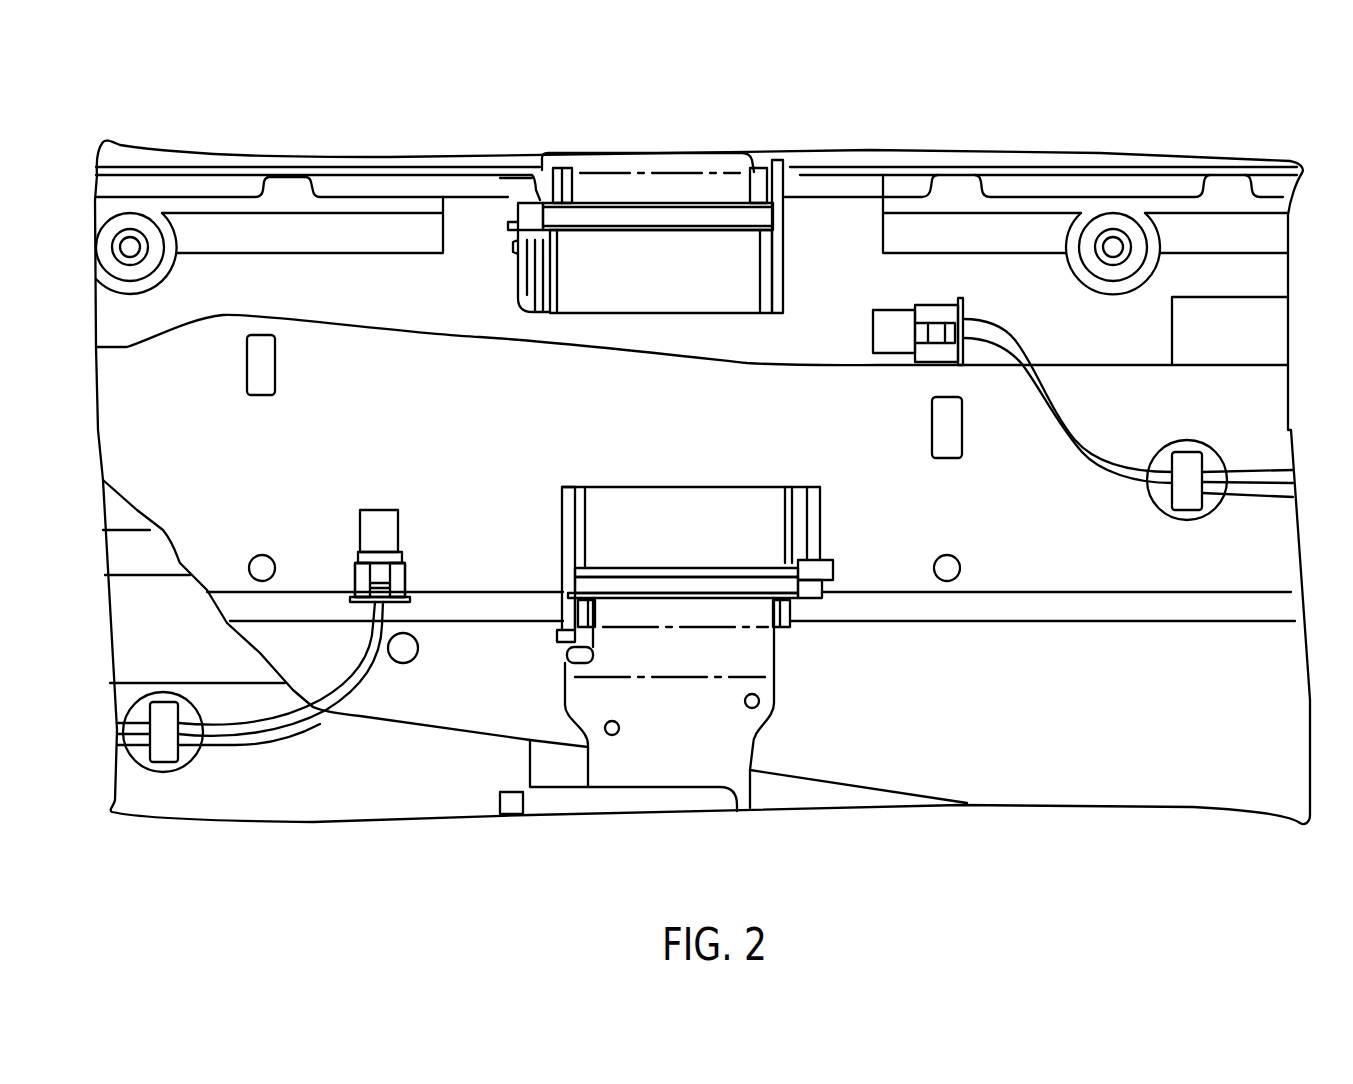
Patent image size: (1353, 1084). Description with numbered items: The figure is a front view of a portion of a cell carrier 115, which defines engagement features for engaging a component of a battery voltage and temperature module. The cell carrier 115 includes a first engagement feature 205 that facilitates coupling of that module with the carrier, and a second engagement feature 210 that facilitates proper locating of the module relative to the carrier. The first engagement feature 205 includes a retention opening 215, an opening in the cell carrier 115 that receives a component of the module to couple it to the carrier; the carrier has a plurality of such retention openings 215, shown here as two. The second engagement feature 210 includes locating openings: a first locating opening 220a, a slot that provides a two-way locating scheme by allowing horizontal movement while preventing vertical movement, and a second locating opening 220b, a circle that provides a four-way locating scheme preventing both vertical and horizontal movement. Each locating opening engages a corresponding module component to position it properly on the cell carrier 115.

The cell carrier 115 is at (140, 118).
The first engagement feature 205 is at (205, 365).
The retention opening 215 is at (262, 333).
The second engagement feature 210 is at (575, 538).
The first locating opening 220a is at (265, 555).
The second locating opening 220b is at (955, 556).